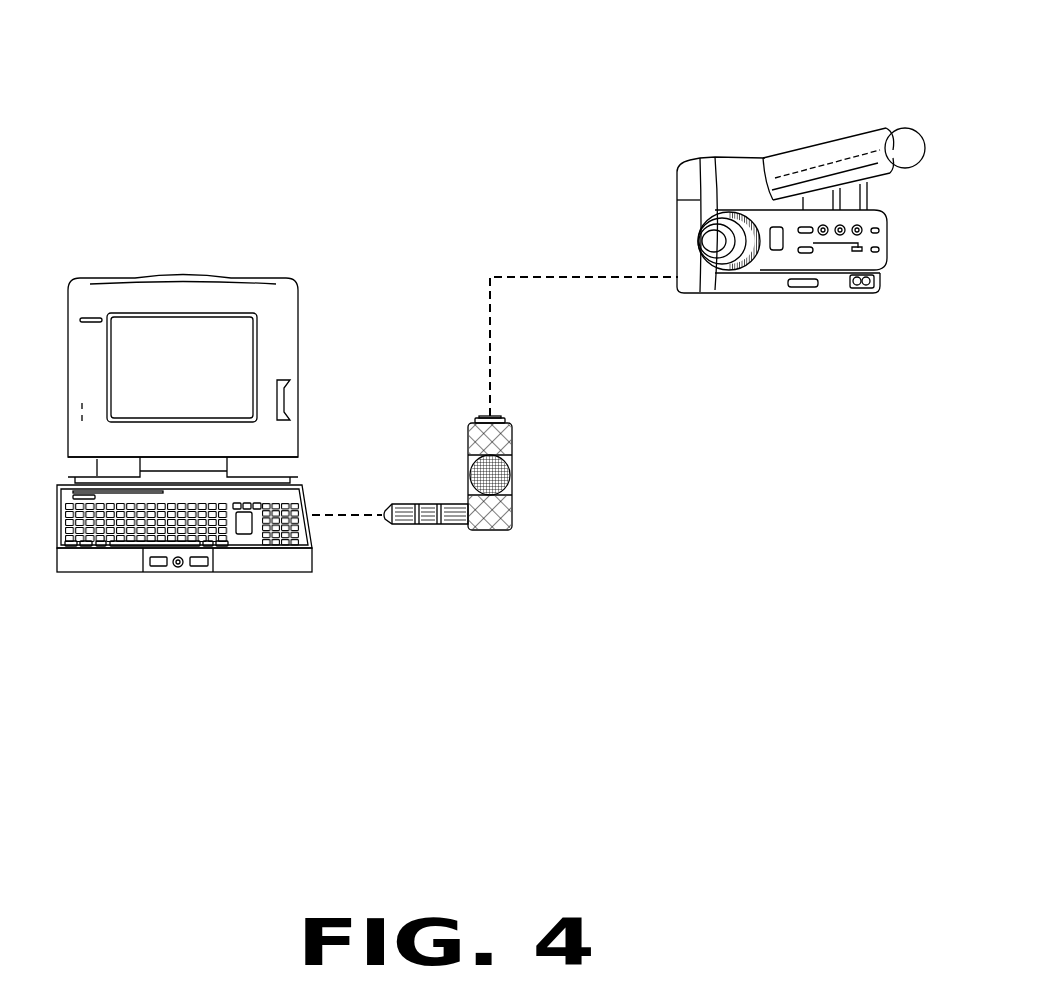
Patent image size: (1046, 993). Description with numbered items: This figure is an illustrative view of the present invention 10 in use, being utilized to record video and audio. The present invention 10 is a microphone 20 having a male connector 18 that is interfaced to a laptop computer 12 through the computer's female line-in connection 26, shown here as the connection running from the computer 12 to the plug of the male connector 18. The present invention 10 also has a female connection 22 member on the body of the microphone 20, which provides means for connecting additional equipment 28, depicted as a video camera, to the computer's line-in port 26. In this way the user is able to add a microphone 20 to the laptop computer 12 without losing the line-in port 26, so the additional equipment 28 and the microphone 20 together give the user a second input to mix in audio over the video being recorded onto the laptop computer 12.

The present invention 10 is at (519, 485).
The computer 12 is at (298, 360).
The male connector 18 is at (431, 528).
The microphone 20 is at (516, 481).
The female connection member 22 is at (507, 414).
The line-in connection 26 is at (322, 498).
The additional equipment 28 is at (775, 127).